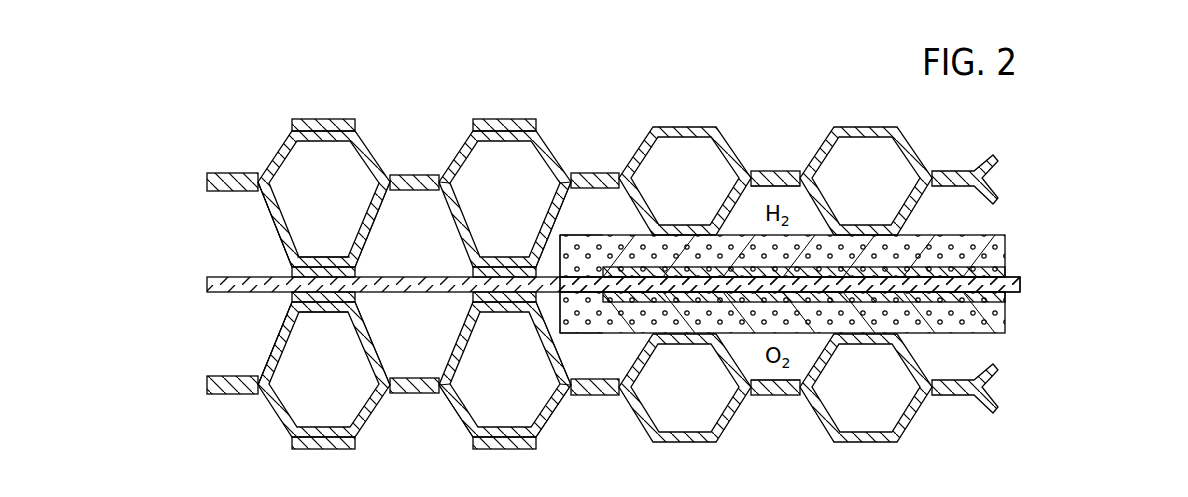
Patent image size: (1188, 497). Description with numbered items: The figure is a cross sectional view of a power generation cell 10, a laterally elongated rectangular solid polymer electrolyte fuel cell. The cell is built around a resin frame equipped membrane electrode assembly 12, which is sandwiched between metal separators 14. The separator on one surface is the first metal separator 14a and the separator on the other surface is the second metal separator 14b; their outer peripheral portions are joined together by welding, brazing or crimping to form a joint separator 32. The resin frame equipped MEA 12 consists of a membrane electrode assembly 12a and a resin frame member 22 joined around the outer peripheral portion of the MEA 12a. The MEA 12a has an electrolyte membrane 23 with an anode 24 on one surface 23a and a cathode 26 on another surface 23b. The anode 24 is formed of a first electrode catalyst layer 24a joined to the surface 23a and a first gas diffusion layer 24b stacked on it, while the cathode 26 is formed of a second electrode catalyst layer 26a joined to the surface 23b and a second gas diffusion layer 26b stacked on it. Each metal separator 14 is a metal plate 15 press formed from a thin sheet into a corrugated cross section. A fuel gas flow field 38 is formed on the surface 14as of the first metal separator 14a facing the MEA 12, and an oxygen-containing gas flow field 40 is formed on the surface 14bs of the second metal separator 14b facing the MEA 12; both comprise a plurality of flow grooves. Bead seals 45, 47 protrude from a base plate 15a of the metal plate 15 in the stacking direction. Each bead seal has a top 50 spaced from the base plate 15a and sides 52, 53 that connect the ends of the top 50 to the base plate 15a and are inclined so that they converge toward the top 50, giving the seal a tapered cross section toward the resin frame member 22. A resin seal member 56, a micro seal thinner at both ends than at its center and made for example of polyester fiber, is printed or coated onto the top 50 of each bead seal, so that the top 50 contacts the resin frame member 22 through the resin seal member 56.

The power generation cell 10 is at (657, 308).
The resin frame equipped membrane electrode assembly 12 is at (952, 340).
The membrane electrode assembly 12a is at (843, 308).
The metal separator 14 is at (272, 163).
The first metal separator 14a is at (999, 195).
The second metal separator 14b is at (999, 372).
The surface of first metal separator 14as is at (588, 196).
The surface of second metal separator 14bs is at (588, 372).
The metal plate 15 is at (408, 190).
The base plate 15a is at (425, 192).
The resin frame member 22 is at (207, 283).
The electrolyte membrane 23 is at (817, 288).
The one surface of electrolyte membrane 23a is at (862, 277).
The another surface of electrolyte membrane 23b is at (859, 296).
The anode 24 is at (817, 203).
The first electrode catalyst layer 24a is at (621, 268).
The first gas diffusion layer 24b is at (683, 245).
The cathode 26 is at (817, 389).
The second electrode catalyst layer 26a is at (680, 302).
The second gas diffusion layer 26b is at (658, 323).
The joint separator 32 is at (112, 132).
The fuel gas flow field 38 is at (790, 207).
The oxygen-containing gas flow field 40 is at (762, 366).
The bead seal 45 is at (264, 232).
The bead seal 47 is at (268, 334).
The top 50 is at (338, 257).
The side 52 is at (285, 232).
The side 53 is at (372, 230).
The resin seal member 56 is at (324, 119).